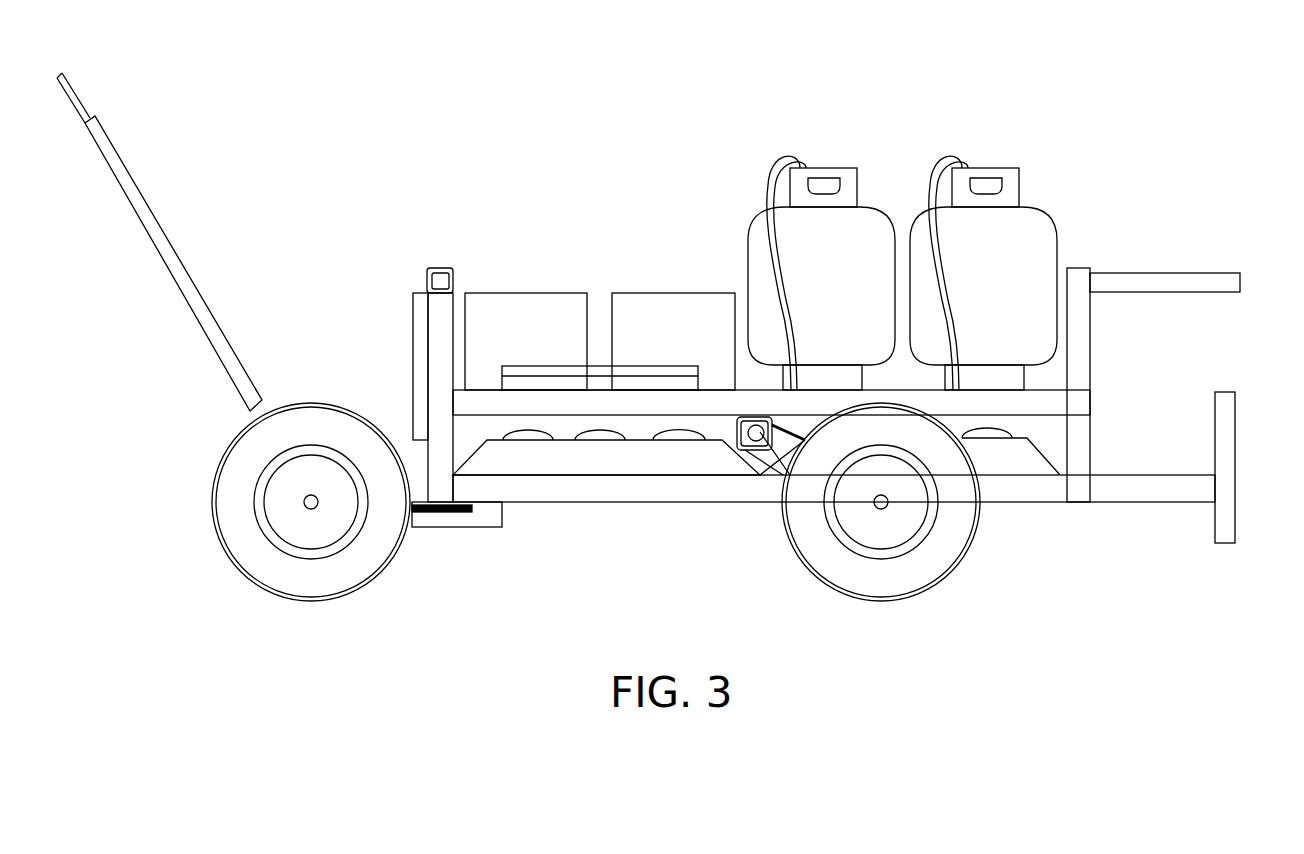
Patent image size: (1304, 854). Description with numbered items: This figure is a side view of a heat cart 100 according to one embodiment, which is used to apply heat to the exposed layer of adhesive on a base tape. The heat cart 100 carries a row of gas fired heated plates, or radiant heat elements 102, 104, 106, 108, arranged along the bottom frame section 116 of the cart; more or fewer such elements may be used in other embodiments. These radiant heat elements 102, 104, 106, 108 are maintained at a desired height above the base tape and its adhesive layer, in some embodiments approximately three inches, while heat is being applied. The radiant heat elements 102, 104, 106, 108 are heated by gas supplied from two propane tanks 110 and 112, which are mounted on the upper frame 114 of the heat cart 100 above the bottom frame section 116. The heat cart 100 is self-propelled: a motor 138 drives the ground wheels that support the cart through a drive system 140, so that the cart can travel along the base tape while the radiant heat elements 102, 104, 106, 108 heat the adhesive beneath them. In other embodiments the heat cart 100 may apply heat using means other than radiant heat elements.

The heat cart 100 is at (1079, 129).
The radiant heat element 102 is at (533, 430).
The radiant heat element 104 is at (606, 430).
The radiant heat element 106 is at (680, 430).
The radiant heat element 108 is at (998, 402).
The propane tank 110 is at (822, 222).
The propane tank 112 is at (990, 222).
The upper frame 114 is at (1045, 402).
The bottom frame section 116 is at (997, 505).
The motor 138 is at (755, 425).
The drive system 140 is at (730, 468).